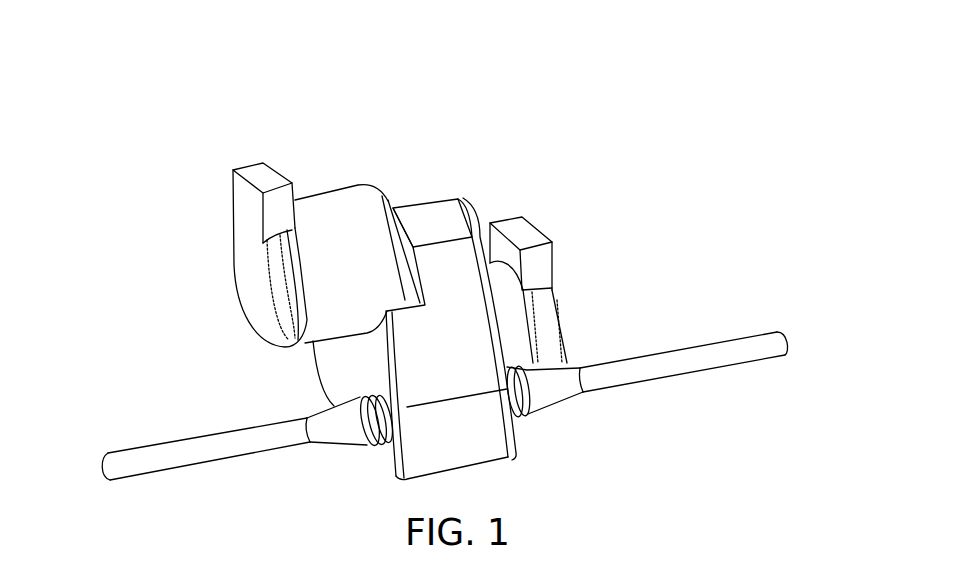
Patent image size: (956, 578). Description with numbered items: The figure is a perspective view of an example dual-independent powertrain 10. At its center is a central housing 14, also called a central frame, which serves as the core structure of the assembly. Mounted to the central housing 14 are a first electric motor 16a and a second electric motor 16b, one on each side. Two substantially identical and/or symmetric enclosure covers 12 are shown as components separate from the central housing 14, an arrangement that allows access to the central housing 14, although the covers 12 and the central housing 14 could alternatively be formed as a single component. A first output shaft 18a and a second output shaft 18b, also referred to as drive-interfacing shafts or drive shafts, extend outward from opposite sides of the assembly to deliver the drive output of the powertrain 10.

The dual-independent powertrain 10 is at (198, 188).
The enclosure cover 12 is at (472, 222).
The central housing 14 is at (420, 208).
The first electric motor 16a is at (547, 235).
The second electric motor 16b is at (233, 270).
The first output shaft 18a is at (253, 427).
The second output shaft 18b is at (633, 353).